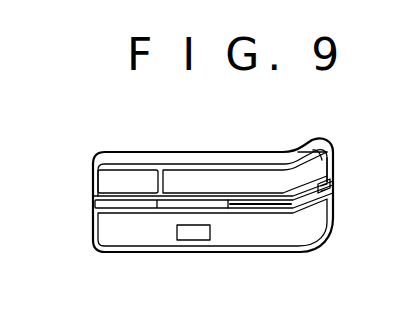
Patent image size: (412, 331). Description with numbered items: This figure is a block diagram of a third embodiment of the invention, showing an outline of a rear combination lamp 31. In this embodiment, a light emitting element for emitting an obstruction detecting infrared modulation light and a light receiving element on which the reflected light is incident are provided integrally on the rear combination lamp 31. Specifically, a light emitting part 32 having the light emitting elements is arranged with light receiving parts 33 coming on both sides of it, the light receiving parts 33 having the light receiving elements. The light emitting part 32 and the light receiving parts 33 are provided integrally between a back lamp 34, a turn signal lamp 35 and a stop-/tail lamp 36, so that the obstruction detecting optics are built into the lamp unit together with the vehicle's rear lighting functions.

The rear combination lamp 31 is at (190, 153).
The light emitting part 32 is at (257, 203).
The light receiving parts 33 is at (102, 203).
The back lamp 34 is at (131, 177).
The turn signal lamp 35 is at (320, 166).
The stop-/tail lamp 36 is at (320, 224).